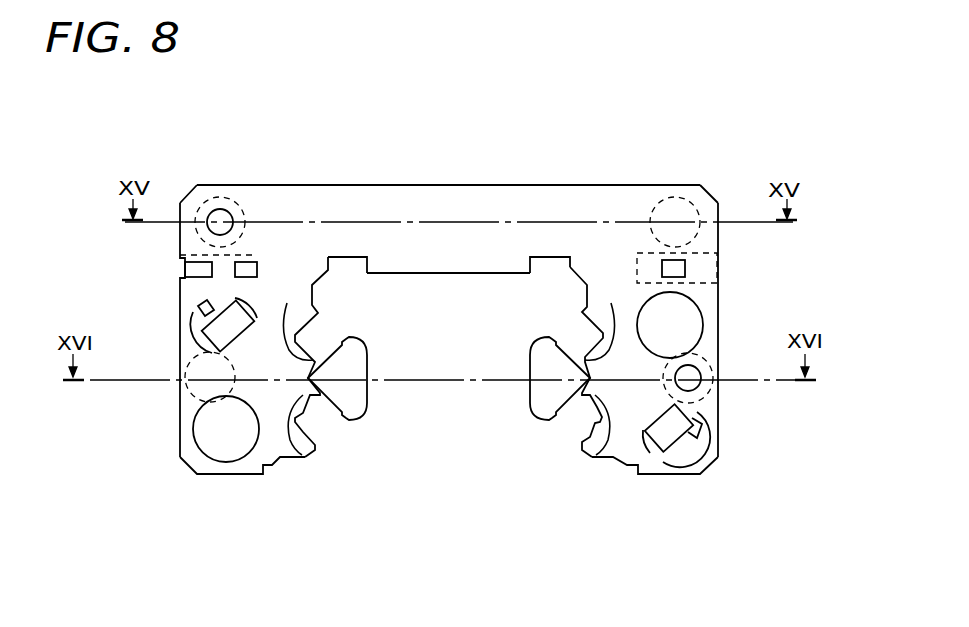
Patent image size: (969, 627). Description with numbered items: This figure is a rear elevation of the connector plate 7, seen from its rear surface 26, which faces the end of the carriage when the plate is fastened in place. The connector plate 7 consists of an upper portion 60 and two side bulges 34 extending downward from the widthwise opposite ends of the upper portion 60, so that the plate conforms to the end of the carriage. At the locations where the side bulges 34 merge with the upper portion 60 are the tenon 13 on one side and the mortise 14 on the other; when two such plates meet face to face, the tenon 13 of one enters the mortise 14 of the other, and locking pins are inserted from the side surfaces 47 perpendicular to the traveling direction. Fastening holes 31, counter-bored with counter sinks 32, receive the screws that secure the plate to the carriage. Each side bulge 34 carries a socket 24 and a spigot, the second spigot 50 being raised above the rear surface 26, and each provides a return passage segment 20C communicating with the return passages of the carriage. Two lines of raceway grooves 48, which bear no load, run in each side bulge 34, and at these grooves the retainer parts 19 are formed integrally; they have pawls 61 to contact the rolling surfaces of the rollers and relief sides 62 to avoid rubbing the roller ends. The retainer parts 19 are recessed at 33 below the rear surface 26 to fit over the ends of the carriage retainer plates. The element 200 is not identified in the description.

The connector plate 7 is at (501, 181).
The tenon 13 is at (672, 268).
The mortise 14 is at (217, 264).
The retainer part 19 is at (352, 373).
The return passage segment 20C is at (225, 332).
The socket 24 is at (693, 322).
The rear surface 26 is at (412, 211).
The fastening hole 31 is at (218, 216).
The counter sink 32 is at (690, 205).
The recess 33 is at (358, 423).
The side bulge 34 is at (275, 425).
The side surface 47 is at (720, 407).
The raceway groove 48 is at (315, 345).
The second spigot 50 is at (213, 300).
The upper portion 60 is at (455, 198).
The pawl 61 is at (350, 338).
The relief side 62 is at (285, 310).
The screw 200 is at (688, 452).